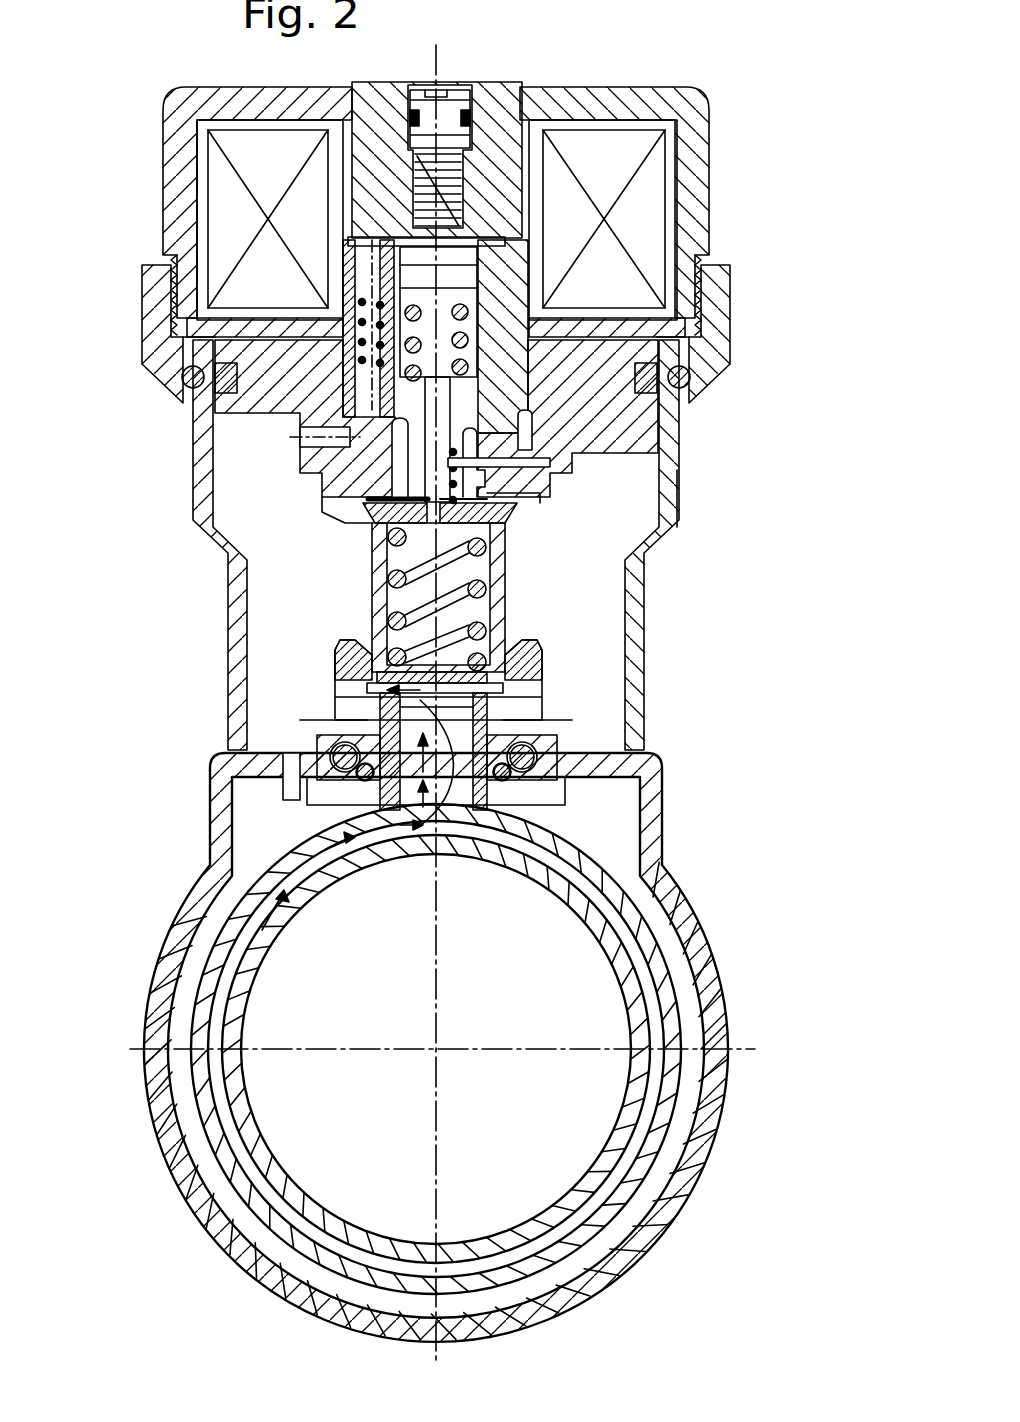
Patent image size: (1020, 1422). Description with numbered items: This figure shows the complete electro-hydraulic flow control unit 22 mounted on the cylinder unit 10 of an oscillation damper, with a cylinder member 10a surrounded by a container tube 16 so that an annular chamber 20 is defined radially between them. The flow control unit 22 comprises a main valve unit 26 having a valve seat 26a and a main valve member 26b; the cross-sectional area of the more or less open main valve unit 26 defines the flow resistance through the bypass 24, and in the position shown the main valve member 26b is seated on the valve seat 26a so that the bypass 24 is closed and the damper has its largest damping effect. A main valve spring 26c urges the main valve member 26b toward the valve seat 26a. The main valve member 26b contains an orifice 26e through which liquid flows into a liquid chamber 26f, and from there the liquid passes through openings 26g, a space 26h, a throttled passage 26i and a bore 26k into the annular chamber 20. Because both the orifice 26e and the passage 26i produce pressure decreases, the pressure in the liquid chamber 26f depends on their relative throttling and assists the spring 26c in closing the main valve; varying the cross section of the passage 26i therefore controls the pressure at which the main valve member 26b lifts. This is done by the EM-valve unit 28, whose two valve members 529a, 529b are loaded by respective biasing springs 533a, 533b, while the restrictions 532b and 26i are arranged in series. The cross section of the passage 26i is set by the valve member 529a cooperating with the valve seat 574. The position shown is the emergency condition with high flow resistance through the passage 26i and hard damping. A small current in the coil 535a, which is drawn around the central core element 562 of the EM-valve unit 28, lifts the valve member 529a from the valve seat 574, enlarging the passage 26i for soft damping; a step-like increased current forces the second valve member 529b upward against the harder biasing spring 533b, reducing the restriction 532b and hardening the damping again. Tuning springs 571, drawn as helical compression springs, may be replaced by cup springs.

The cylinder unit 10 is at (730, 1081).
The cylinder member 10a is at (612, 972).
The container tube 16 is at (685, 1192).
The annular chamber 20 is at (198, 962).
The flow control unit 22 is at (156, 232).
The bypass 24 is at (296, 800).
The main valve unit 26 is at (316, 700).
The valve seat 26a is at (548, 714).
The main valve member 26b is at (535, 673).
The main valve spring 26c is at (380, 589).
The orifice 26e is at (460, 660).
The liquid chamber 26f is at (460, 603).
The openings 26g is at (668, 532).
The space 26h is at (640, 455).
The passage 26i is at (322, 487).
The bore 26k is at (300, 438).
The EM-valve unit 28 is at (545, 367).
The valve member 529a is at (352, 397).
The second valve member 529b is at (502, 345).
The restriction 532b is at (362, 517).
The biasing spring 533a is at (348, 330).
The biasing spring 533b is at (520, 382).
The coil 535a is at (635, 160).
The pole core 562 is at (512, 268).
The tuning spring 571 is at (522, 492).
The valve seat 574 is at (593, 432).